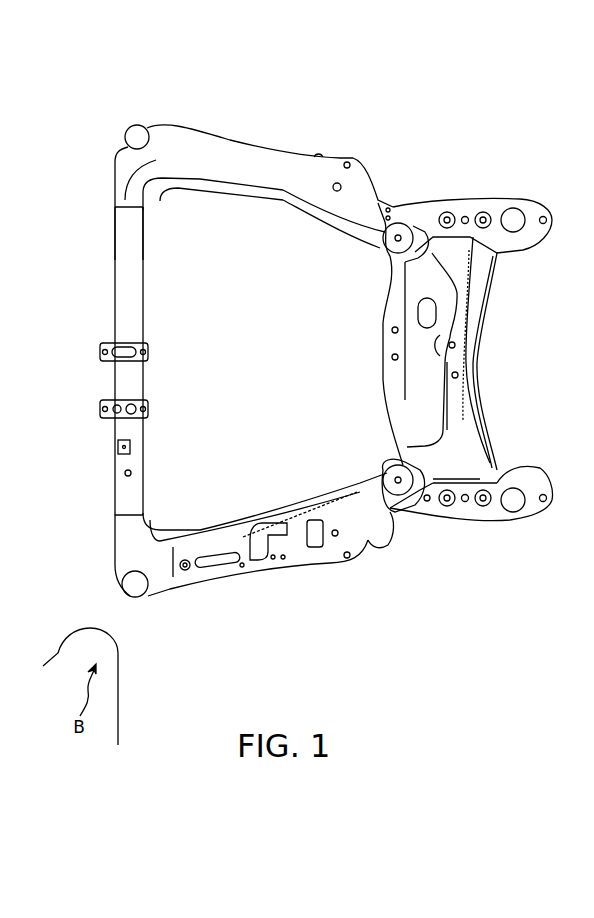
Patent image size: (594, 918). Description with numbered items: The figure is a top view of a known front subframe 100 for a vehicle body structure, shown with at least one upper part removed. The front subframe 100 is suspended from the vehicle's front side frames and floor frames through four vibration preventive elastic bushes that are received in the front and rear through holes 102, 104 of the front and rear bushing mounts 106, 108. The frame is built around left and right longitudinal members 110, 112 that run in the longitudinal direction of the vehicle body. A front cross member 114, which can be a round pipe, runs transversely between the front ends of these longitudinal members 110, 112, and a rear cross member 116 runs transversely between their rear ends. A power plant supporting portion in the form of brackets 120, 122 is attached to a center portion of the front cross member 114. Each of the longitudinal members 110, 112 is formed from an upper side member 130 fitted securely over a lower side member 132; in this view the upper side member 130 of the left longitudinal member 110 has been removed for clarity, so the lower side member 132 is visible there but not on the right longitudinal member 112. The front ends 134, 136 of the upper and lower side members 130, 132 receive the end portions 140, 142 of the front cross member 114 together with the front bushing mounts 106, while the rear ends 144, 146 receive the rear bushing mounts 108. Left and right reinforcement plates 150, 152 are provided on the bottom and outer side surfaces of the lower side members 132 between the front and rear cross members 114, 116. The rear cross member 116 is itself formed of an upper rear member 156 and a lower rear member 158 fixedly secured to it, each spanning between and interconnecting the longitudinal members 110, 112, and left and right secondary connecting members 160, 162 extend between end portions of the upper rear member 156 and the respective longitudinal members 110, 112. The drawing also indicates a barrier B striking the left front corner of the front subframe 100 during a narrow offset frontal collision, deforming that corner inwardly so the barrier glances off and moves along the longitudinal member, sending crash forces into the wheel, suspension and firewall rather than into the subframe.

The front subframe 100 is at (356, 141).
The front through hole 102 is at (136, 124).
The rear through hole 104 is at (513, 212).
The front bushing mount 106 is at (124, 136).
The rear bushing mount 108 is at (522, 472).
The left longitudinal member 110 is at (270, 505).
The right longitudinal member 112 is at (290, 186).
The front cross member 114 is at (143, 296).
The rear cross member 116 is at (478, 360).
The bracket 120 is at (100, 409).
The bracket 122 is at (100, 352).
The upper side member 130 is at (290, 145).
The lower side member 132 is at (236, 536).
The front end of upper side member 134 is at (165, 206).
The front end of lower side member 136 is at (150, 525).
The end portion of front cross member 140 is at (125, 512).
The end portion of front cross member 142 is at (125, 222).
The rear end of upper side member 144 is at (475, 522).
The rear end of lower side member 146 is at (475, 198).
The left reinforcement plate 150 is at (372, 548).
The right reinforcement plate 152 is at (373, 166).
The upper rear member 156 is at (390, 382).
The lower rear member 158 is at (482, 395).
The left secondary connecting member 160 is at (392, 468).
The right secondary connecting member 162 is at (385, 254).